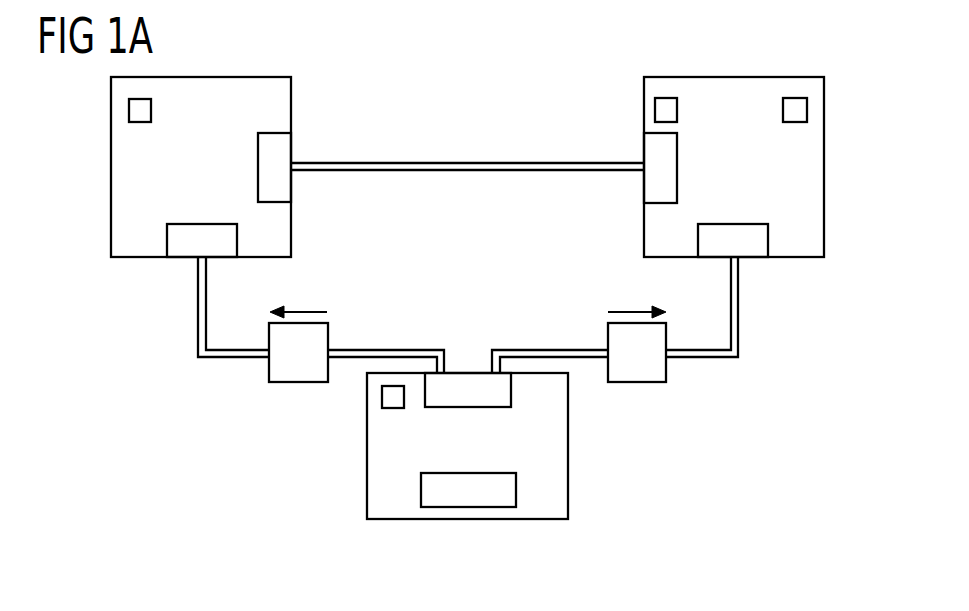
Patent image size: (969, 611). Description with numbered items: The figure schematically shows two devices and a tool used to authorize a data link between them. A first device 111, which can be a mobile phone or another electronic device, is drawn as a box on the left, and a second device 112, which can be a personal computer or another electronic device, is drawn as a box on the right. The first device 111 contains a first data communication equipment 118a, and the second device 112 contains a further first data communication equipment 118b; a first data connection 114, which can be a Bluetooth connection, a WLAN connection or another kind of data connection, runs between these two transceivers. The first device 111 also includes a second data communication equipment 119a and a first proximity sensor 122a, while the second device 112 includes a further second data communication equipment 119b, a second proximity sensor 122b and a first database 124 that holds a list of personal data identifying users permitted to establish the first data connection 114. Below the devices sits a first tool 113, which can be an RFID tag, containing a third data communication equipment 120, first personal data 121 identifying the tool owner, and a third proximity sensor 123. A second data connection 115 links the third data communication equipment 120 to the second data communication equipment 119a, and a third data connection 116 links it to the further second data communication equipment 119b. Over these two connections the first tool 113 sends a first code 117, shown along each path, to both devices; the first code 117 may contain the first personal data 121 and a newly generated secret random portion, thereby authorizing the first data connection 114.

The first device 111 is at (111, 167).
The second device 112 is at (824, 168).
The first tool 113 is at (470, 520).
The first data connection 114 is at (467, 163).
The second data connection 115 is at (198, 308).
The third data connection 116 is at (738, 308).
The first code 117 is at (298, 383).
The first data communication equipment 118a is at (286, 188).
The further first data communication equipment 118b is at (649, 188).
The second data communication equipment 119a is at (203, 234).
The further second data communication equipment 119b is at (734, 234).
The third data communication equipment 120 is at (467, 383).
The first personal data 121 is at (469, 473).
The first proximity sensor 122a is at (152, 110).
The second proximity sensor 122b is at (795, 123).
The third proximity sensor 123 is at (391, 410).
The first database 124 is at (678, 112).